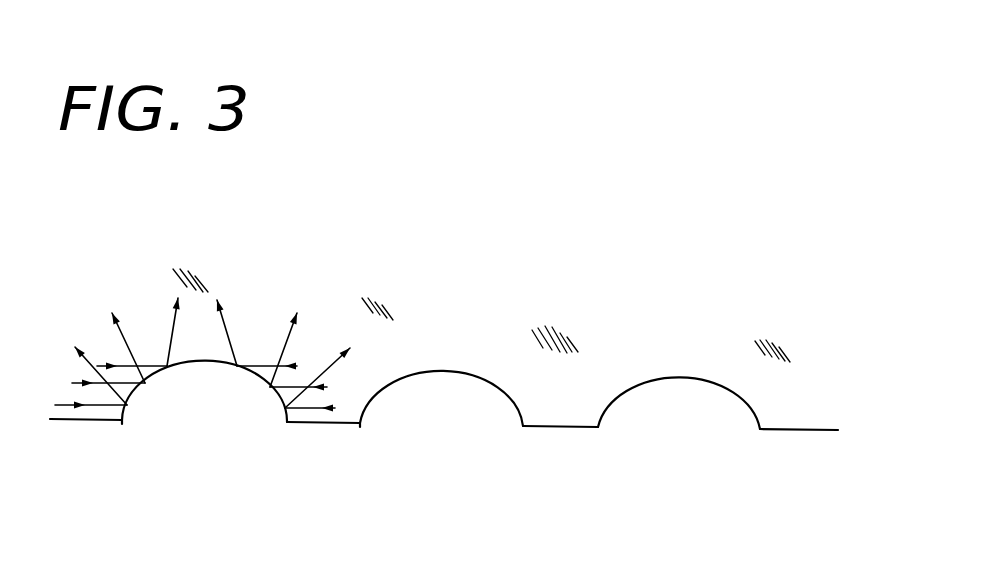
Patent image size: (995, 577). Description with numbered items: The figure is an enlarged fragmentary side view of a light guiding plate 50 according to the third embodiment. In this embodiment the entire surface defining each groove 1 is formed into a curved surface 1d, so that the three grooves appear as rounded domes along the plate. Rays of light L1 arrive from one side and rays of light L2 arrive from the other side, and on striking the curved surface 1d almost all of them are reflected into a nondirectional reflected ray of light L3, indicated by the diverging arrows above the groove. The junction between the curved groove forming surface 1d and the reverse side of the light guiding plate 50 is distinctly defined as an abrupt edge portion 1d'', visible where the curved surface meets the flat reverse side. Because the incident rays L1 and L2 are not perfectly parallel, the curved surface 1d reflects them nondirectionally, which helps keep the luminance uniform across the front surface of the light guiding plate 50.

The groove 1 is at (444, 455).
The curved surface 1d is at (441, 430).
The abrupt edge portion 1d'' is at (256, 485).
The light guiding plate 50 is at (568, 269).
The ray of light L1 is at (103, 386).
The ray of light L2 is at (299, 388).
The nondirectional reflected ray of light L3 is at (170, 330).